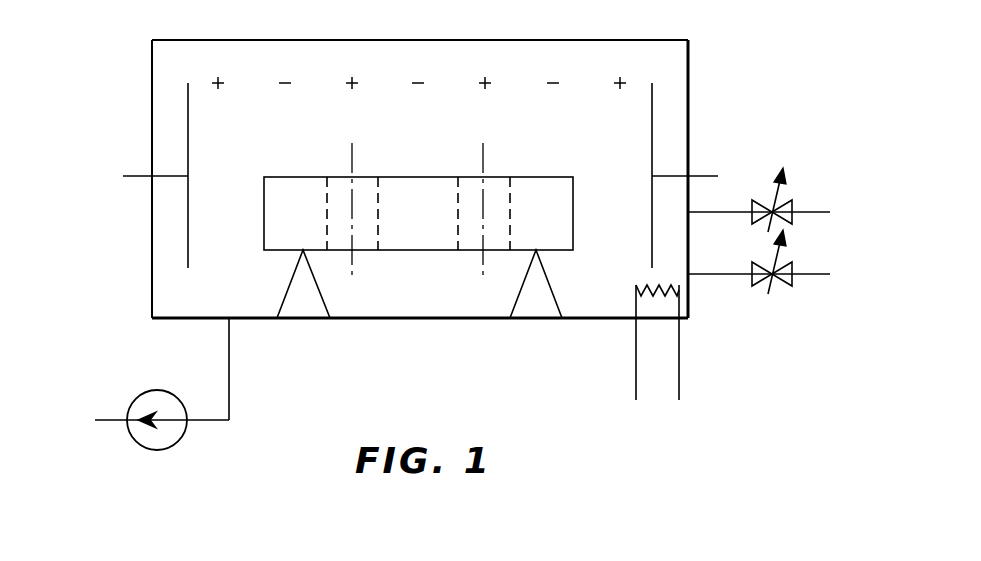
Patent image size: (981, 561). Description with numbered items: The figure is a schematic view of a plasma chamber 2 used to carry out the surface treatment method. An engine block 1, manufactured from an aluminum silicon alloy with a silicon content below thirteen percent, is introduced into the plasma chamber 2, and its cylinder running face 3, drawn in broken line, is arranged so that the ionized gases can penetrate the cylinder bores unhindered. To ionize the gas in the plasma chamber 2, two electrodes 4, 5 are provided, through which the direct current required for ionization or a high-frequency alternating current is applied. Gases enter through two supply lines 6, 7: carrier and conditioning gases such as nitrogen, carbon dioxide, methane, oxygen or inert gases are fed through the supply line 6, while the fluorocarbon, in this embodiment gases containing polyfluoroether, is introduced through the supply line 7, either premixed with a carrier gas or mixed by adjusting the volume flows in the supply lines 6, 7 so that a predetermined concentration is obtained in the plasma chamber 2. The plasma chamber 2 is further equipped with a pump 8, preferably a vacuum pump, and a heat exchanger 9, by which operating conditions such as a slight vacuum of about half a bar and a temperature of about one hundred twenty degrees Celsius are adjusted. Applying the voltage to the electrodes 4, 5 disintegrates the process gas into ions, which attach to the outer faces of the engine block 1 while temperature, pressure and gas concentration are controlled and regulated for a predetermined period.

The engine block 1 is at (562, 212).
The plasma chamber 2 is at (130, 266).
The cylinder running face 3 is at (327, 218).
The electrode 4 is at (188, 109).
The electrode 5 is at (652, 109).
The supply line 6 is at (808, 210).
The supply line 7 is at (823, 277).
The pump 8 is at (150, 437).
The heat exchanger 9 is at (636, 368).